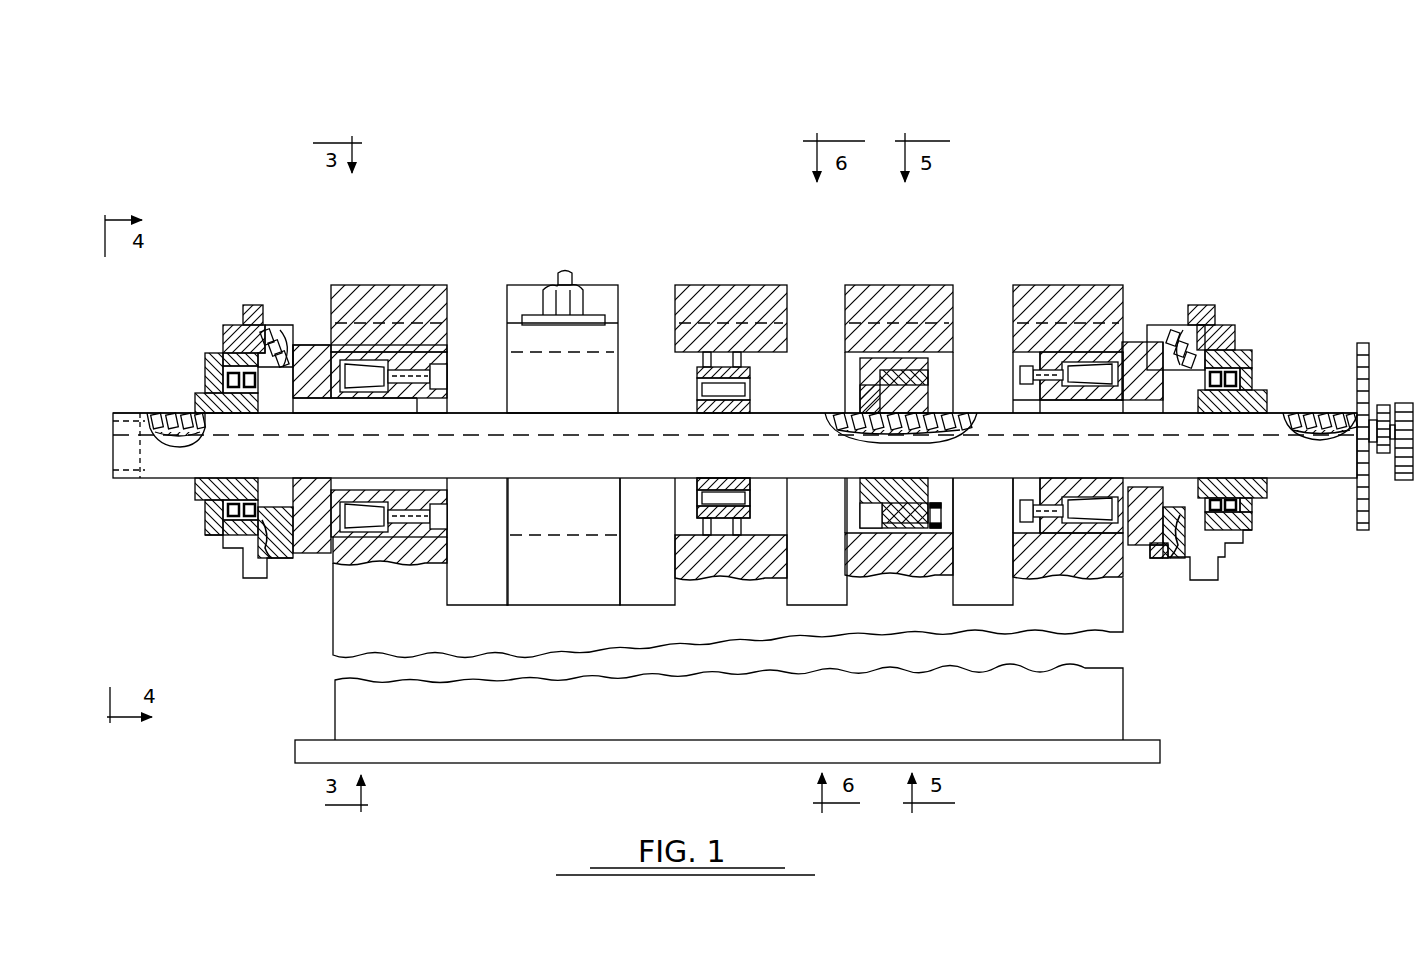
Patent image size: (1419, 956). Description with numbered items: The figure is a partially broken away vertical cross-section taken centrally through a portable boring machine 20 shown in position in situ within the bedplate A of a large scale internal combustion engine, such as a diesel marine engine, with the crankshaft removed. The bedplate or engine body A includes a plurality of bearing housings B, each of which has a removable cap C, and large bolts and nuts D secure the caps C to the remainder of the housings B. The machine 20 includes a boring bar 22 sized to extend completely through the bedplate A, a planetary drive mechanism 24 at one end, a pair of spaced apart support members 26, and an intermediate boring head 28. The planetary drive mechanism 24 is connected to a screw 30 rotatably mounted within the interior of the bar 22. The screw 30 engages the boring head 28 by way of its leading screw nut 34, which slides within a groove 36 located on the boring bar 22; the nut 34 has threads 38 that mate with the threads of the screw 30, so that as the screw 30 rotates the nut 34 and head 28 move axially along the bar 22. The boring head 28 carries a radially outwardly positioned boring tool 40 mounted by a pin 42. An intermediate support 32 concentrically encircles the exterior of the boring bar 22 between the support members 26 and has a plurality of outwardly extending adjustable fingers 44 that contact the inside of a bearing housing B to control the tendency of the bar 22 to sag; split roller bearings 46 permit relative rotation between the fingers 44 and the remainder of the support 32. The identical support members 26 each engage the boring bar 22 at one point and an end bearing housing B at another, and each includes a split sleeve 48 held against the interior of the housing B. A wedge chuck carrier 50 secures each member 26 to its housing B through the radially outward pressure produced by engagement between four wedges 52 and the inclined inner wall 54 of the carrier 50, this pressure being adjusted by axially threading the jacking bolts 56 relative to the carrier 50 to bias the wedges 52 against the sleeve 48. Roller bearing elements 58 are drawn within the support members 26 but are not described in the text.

The portable boring machine 20 is at (1266, 135).
The boring bar 22 is at (152, 480).
The planetary drive mechanism 24 is at (1356, 542).
The support members 26 is at (197, 580).
The boring head 28 is at (940, 372).
The screw 30 is at (1300, 416).
The intermediate support 32 is at (688, 505).
The leading screw nut 34 is at (862, 405).
The groove 36 is at (958, 432).
The threads 38 is at (885, 395).
The boring tool 40 is at (940, 528).
The pin 42 is at (947, 517).
The fingers 44 is at (700, 362).
The split roller bearings 46 is at (697, 388).
The split sleeve 48 is at (372, 300).
The wedge chuck carrier 50 is at (318, 320).
The wedges 52 is at (400, 310).
The inclined inner wall 54 is at (335, 540).
The jacking bolts 56 is at (447, 380).
The roller bearing 58 is at (298, 322).
The bedplate A is at (335, 713).
The bearing housings B is at (447, 380).
The removable cap C is at (626, 285).
The bolts and nuts D is at (598, 285).